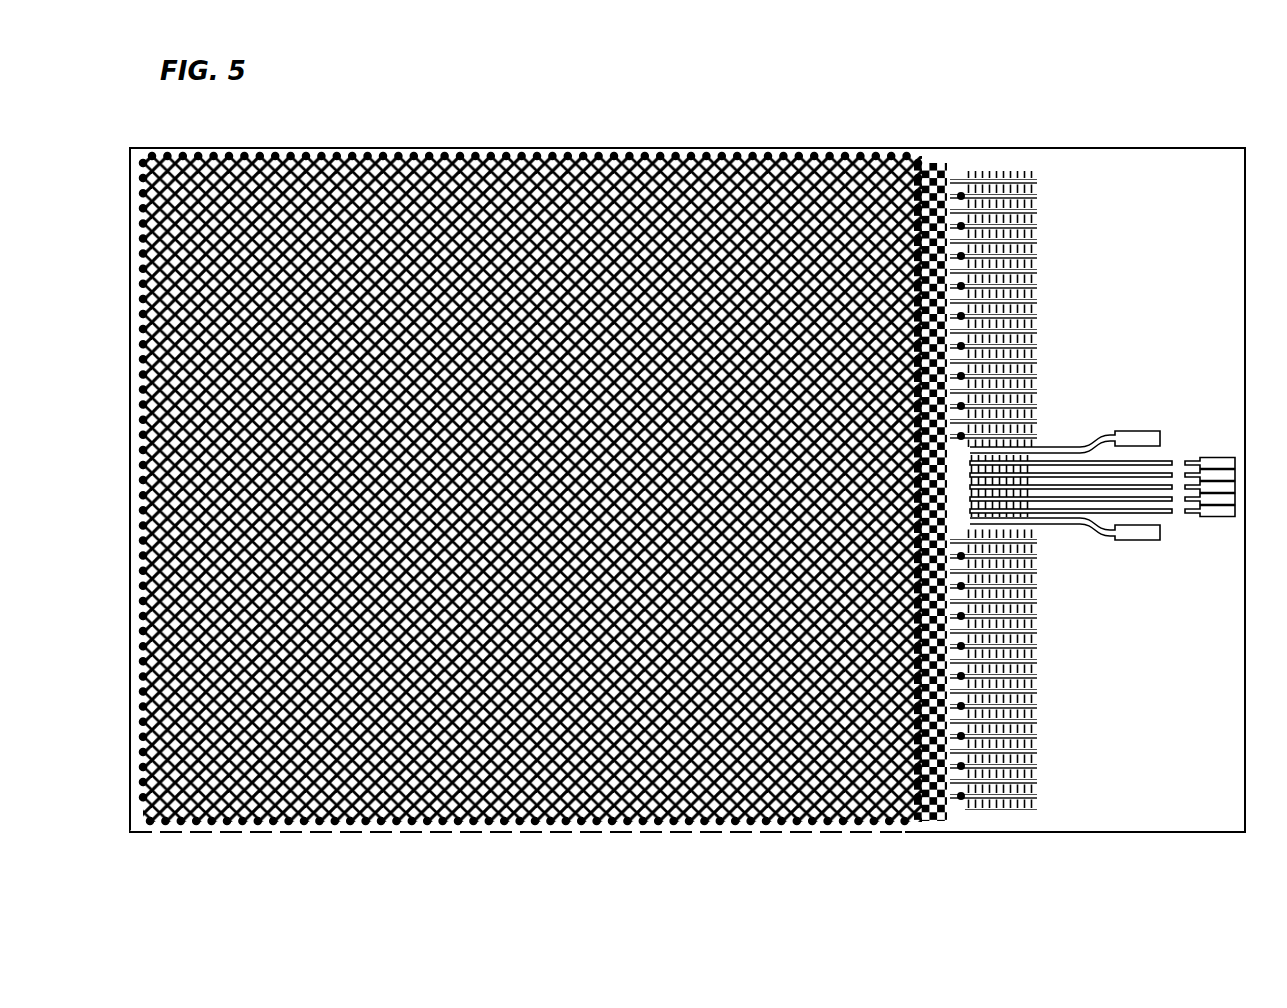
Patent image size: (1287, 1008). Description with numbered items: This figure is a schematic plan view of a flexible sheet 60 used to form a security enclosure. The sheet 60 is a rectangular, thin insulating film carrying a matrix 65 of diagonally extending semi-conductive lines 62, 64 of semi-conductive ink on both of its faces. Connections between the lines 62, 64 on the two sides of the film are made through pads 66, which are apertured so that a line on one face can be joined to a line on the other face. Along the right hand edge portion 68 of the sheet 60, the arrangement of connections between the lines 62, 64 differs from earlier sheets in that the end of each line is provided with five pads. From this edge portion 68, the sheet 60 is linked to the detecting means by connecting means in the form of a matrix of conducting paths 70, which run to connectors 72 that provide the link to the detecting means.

The flexible sheet 60 is at (967, 851).
The semi-conductive line 62 is at (620, 156).
The semi-conductive line 64 is at (718, 148).
The matrix 65 is at (750, 128).
The pads 66 is at (582, 156).
The right hand edge portion 68 is at (1163, 670).
The matrix of conducting paths 70 is at (1060, 357).
The connectors 72 is at (1197, 402).